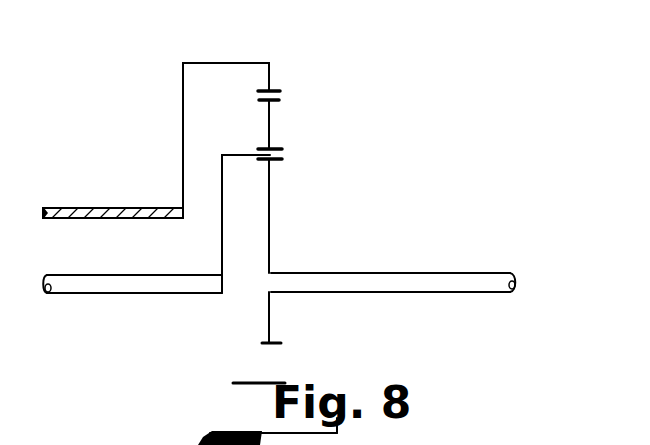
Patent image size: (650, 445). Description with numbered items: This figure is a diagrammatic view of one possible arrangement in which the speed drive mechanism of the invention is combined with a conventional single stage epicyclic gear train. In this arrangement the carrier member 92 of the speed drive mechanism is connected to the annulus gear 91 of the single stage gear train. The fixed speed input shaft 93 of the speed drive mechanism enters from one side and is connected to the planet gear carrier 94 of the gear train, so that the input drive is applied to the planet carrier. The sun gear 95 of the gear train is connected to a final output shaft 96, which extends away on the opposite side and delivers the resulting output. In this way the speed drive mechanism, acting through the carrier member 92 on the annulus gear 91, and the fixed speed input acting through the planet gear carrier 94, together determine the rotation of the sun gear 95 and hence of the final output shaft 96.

The annulus gear 91 is at (269, 73).
The carrier member 92 is at (81, 208).
The fixed speed input shaft 93 is at (83, 285).
The planet gear carrier 94 is at (269, 120).
The sun gear 95 is at (271, 317).
The final output shaft 96 is at (463, 273).